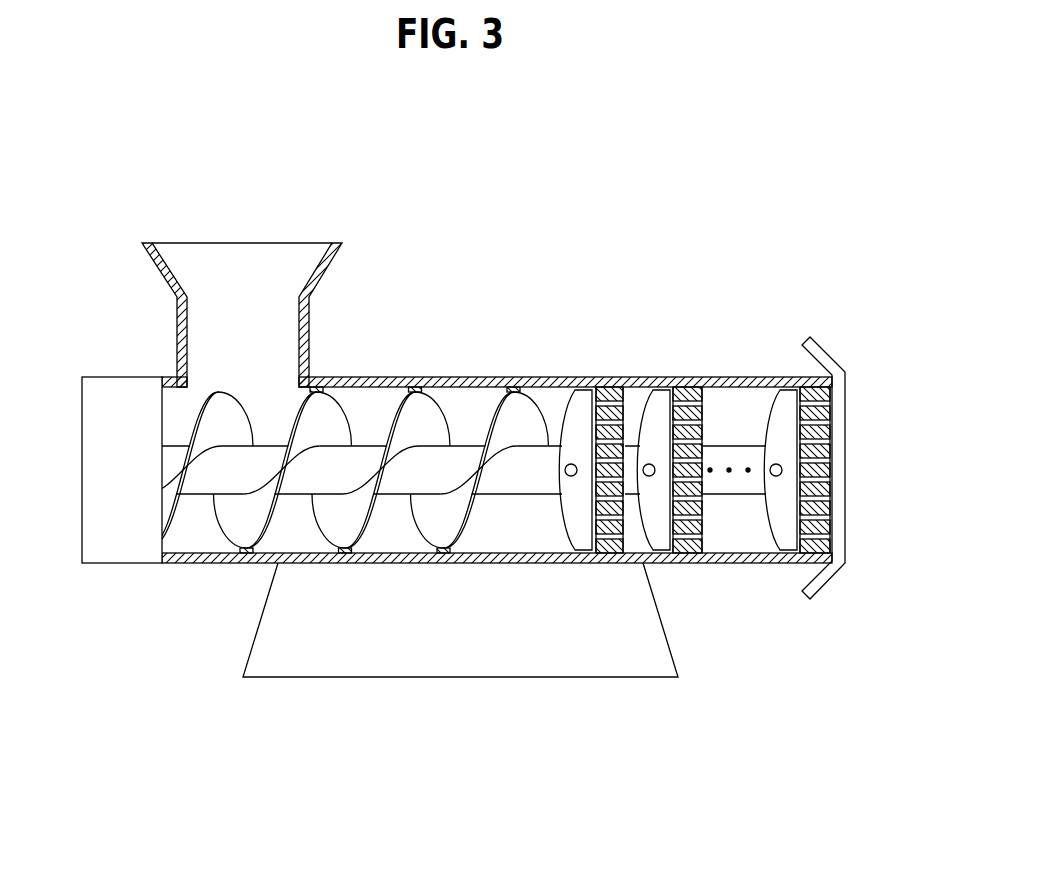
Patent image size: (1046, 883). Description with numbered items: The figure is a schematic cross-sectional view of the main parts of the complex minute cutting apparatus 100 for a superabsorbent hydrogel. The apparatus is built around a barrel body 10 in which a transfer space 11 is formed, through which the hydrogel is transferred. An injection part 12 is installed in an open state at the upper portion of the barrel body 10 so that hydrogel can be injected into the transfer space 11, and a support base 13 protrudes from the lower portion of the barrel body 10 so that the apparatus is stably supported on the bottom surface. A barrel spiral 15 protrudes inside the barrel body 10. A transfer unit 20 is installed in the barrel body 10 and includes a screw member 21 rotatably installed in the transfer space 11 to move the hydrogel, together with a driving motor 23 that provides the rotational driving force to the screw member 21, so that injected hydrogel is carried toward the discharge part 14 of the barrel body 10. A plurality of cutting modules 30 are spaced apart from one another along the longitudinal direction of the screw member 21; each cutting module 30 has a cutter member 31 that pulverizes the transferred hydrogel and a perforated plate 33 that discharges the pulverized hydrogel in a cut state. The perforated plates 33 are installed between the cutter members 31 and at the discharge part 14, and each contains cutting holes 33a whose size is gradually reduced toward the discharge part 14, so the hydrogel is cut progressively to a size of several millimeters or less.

The complex minute cutting apparatus 100 is at (695, 205).
The barrel body 10 is at (458, 378).
The transfer space 11 is at (357, 403).
The injection part 12 is at (158, 268).
The support base 13 is at (443, 662).
The discharge part 14 is at (846, 465).
The barrel spiral 15 is at (413, 387).
The transfer unit 20 is at (424, 541).
The screw member 21 is at (205, 483).
The driving motor 23 is at (122, 514).
The cutting module 30 is at (741, 484).
The cutter member 31 is at (577, 395).
The perforated plate 33 is at (613, 400).
The cutting holes 33a is at (614, 540).